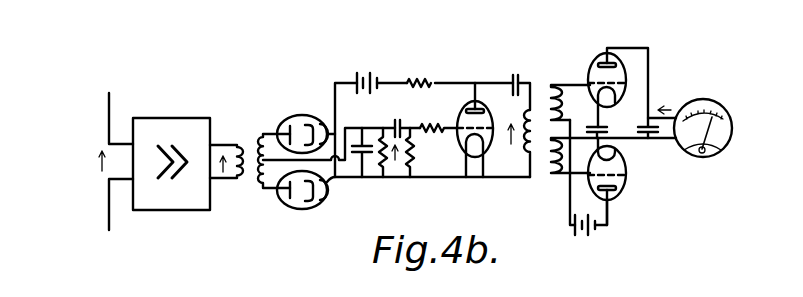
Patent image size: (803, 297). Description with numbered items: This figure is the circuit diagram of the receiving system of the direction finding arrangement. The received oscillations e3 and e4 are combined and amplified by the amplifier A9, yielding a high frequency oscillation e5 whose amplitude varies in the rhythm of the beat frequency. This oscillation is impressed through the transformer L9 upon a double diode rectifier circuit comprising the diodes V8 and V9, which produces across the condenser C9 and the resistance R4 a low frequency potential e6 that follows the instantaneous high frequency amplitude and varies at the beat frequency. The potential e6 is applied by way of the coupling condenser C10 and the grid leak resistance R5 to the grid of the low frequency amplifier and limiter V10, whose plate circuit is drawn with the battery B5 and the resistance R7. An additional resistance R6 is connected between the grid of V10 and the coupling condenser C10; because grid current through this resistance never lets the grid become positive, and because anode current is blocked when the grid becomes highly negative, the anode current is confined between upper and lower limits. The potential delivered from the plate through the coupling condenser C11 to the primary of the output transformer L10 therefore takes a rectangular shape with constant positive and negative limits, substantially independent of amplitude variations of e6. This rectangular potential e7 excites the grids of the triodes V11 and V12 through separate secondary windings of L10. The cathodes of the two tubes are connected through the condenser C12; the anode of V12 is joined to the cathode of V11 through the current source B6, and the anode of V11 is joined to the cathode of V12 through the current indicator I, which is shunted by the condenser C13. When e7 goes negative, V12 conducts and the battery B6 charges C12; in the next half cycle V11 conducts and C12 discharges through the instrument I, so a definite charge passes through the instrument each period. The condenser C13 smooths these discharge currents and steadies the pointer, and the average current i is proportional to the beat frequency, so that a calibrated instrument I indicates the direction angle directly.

The received oscillation e3 is at (90, 133).
The received oscillation e4 is at (100, 189).
The amplifier A9 is at (165, 127).
The high frequency oscillation e5 is at (224, 180).
The transformer L9 is at (253, 178).
The diode V8 is at (303, 124).
The diode V9 is at (303, 201).
The battery B5 is at (361, 71).
The resistance R7 is at (416, 78).
The coupling condenser C11 is at (518, 73).
The coupling condenser C10 is at (397, 121).
The resistance R6 is at (433, 126).
The condenser C9 is at (360, 153).
The resistance R4 is at (383, 163).
The low frequency potential e6 is at (401, 161).
The grid leak resistance R5 is at (418, 162).
The low frequency amplifier and limiter V10 is at (478, 106).
The rectangular potential e7 is at (505, 134).
The output transformer L10 is at (541, 156).
The current source B6 is at (589, 233).
The triode V11 is at (601, 73).
The condenser C12 is at (606, 130).
The triode V12 is at (620, 191).
The condenser C13 is at (651, 135).
The current i is at (664, 101).
The current indicator I is at (695, 156).